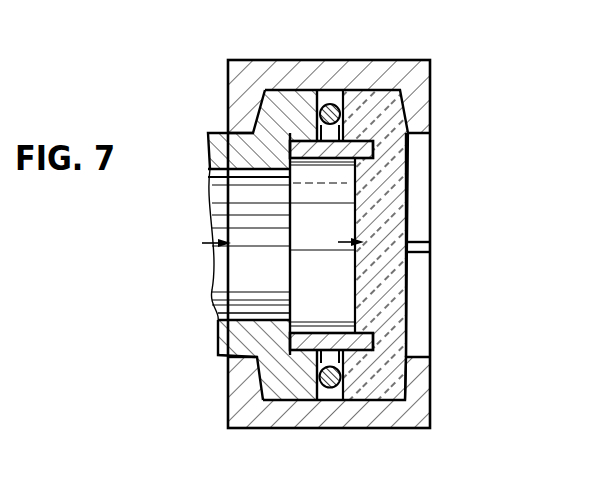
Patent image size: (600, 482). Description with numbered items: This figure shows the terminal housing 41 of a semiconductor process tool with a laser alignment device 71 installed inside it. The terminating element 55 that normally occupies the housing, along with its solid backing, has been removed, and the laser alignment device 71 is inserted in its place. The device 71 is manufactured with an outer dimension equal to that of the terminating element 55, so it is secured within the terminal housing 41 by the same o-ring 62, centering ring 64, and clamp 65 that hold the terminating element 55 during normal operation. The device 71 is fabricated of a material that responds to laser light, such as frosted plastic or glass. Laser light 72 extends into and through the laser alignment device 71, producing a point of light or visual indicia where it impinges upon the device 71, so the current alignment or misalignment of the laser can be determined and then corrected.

The terminal housing 41 is at (215, 132).
The terminating element 55 is at (303, 295).
The o-ring 62 is at (340, 115).
The centering ring 64 is at (335, 140).
The clamp 65 is at (356, 68).
The laser alignment device 71 is at (400, 320).
The laser light 72 is at (202, 244).